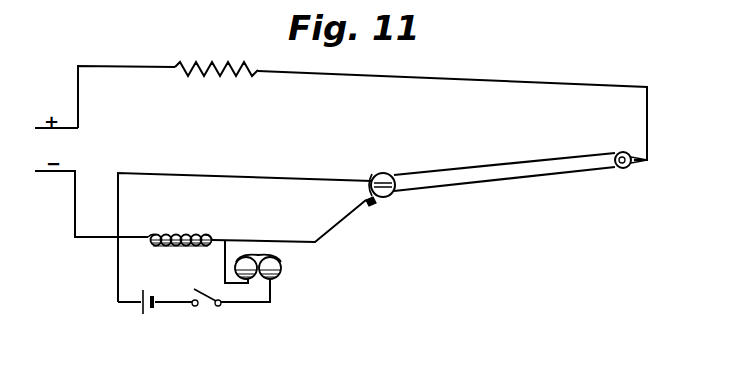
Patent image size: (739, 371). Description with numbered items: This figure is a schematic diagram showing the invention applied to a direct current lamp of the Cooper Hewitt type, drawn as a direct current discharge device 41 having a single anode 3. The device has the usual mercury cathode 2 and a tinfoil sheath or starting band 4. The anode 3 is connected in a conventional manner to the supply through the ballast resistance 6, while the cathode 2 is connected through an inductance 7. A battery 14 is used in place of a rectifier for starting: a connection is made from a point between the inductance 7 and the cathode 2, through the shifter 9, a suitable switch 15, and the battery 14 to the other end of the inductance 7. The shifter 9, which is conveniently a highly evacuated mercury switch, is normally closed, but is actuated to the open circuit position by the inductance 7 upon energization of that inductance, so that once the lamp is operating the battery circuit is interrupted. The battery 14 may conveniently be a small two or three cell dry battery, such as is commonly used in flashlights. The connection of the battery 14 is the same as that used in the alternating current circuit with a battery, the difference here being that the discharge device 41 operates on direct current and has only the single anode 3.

The mercury cathode 2 is at (380, 178).
The anode 3 is at (632, 166).
The tinfoil sheath or starting band 4 is at (388, 200).
The ballast resistance 6 is at (246, 64).
The inductance 7 is at (170, 236).
The shifter 9 is at (283, 260).
The battery 14 is at (147, 296).
The switch 15 is at (206, 306).
The direct current discharge device 41 is at (510, 176).